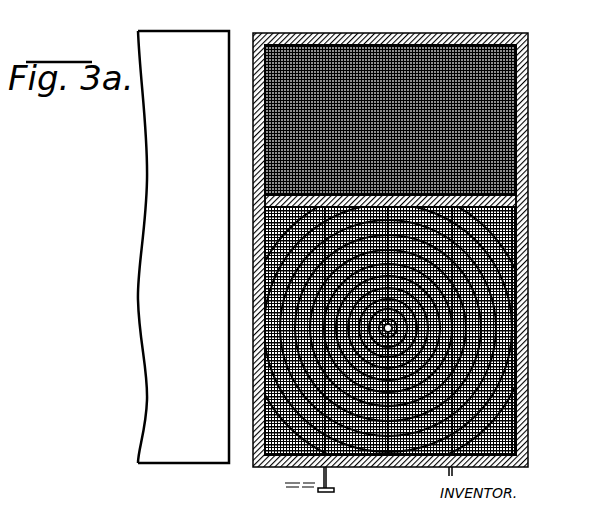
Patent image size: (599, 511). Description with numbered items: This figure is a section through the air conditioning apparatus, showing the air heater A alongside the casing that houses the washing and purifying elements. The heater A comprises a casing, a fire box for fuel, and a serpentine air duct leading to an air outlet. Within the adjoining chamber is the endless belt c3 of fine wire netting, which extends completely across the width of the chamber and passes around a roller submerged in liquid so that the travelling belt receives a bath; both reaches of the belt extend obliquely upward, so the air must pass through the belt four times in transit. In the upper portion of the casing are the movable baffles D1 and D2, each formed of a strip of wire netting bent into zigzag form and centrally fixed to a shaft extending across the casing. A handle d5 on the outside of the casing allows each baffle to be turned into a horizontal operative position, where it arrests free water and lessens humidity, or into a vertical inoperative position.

The air heater A is at (183, 247).
The endless belt c3 is at (527, 82).
The movable baffle D1 is at (503, 426).
The movable baffle D2 is at (297, 417).
The handle d5 is at (332, 490).
The terminal pin da is at (455, 472).